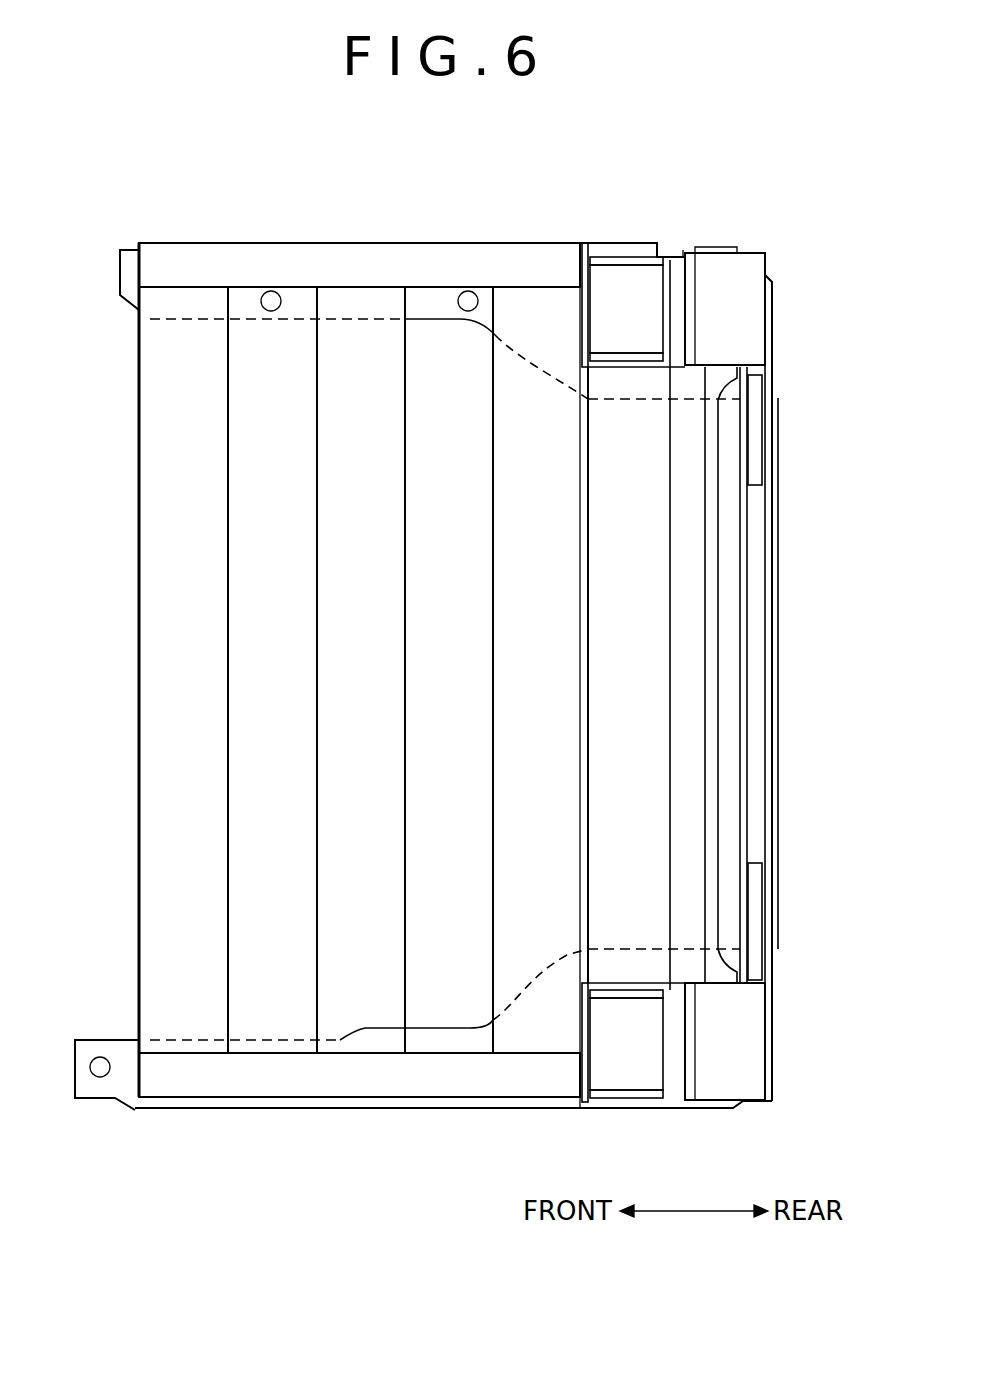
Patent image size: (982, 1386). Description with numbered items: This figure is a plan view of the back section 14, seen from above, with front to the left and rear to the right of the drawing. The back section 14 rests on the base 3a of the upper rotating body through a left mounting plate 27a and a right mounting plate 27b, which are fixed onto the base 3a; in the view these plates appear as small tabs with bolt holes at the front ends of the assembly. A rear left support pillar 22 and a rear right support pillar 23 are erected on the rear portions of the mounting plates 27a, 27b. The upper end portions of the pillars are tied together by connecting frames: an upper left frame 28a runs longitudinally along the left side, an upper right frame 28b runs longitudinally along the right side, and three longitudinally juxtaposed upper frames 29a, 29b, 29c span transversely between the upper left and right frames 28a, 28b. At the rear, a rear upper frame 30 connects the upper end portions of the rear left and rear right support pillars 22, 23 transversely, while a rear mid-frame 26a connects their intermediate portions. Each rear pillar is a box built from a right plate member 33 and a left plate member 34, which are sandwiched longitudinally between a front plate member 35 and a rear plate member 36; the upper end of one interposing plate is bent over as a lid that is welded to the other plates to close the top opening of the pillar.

The back section 14 is at (127, 238).
The base 3a is at (78, 796).
The rear left support pillar 22 is at (668, 1098).
The rear right support pillar 23 is at (683, 251).
The rear mid-frame 26a is at (750, 640).
The left mounting plate 27a is at (100, 1082).
The right mounting plate 27b is at (118, 268).
The upper left frame 28a is at (282, 1080).
The upper right frame 28b is at (292, 253).
The upper frame 29a is at (155, 648).
The upper frame 29b is at (330, 648).
The upper frame 29c is at (505, 648).
The rear upper frame 30 is at (622, 765).
The right plate member 33 is at (610, 278).
The left plate member 34 is at (622, 1060).
The front plate member 35 is at (585, 275).
The rear plate member 36 is at (727, 308).